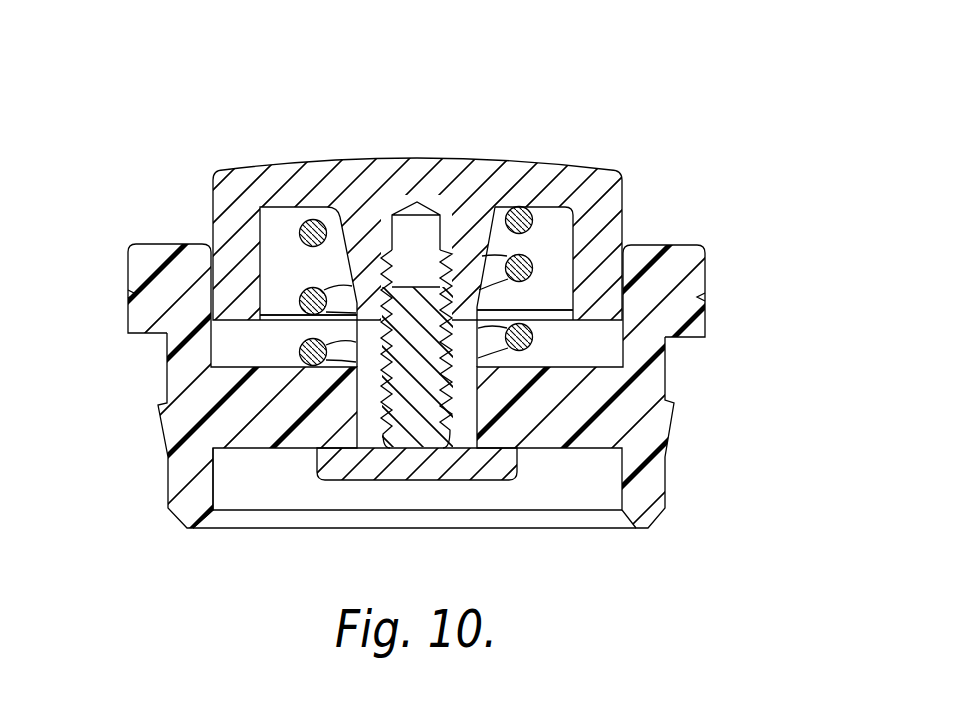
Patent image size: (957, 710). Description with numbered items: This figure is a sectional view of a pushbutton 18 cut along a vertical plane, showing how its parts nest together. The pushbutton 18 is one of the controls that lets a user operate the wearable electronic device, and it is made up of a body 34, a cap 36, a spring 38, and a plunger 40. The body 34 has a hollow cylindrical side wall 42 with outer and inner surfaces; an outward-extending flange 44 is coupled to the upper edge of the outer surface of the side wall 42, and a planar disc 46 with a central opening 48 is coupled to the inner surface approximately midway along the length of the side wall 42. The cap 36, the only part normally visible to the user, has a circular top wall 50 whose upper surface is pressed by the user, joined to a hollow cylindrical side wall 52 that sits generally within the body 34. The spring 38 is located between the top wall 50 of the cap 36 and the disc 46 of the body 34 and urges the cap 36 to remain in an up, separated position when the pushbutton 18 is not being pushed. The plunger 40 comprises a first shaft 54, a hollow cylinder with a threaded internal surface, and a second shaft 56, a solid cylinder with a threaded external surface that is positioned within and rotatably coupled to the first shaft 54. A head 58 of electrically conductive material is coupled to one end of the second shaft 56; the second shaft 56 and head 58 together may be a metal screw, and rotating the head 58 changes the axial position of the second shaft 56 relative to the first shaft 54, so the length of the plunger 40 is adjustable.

The pushbutton 18 is at (467, 82).
The body 34 is at (131, 237).
The cap 36 is at (321, 154).
The spring 38 is at (538, 255).
The plunger 40 is at (335, 265).
The side wall 42 is at (182, 382).
The flange 44 is at (693, 265).
The planar disc 46 is at (268, 437).
The central opening 48 is at (510, 360).
The top wall 50 is at (458, 167).
The side wall 52 is at (612, 213).
The first shaft 54 is at (370, 323).
The second shaft 56 is at (427, 390).
The head 58 is at (487, 472).